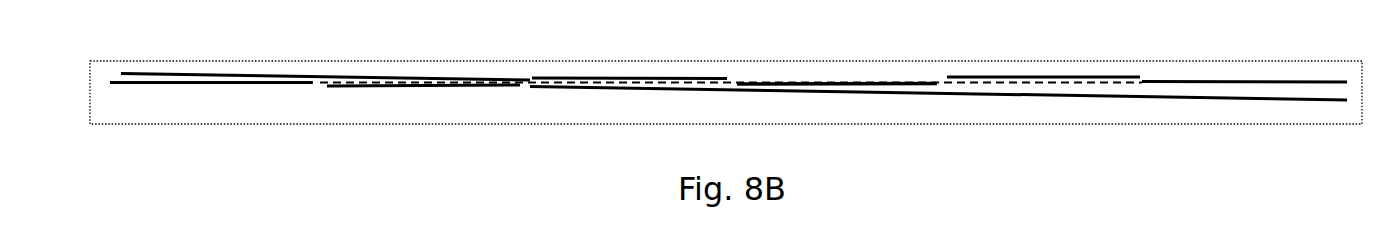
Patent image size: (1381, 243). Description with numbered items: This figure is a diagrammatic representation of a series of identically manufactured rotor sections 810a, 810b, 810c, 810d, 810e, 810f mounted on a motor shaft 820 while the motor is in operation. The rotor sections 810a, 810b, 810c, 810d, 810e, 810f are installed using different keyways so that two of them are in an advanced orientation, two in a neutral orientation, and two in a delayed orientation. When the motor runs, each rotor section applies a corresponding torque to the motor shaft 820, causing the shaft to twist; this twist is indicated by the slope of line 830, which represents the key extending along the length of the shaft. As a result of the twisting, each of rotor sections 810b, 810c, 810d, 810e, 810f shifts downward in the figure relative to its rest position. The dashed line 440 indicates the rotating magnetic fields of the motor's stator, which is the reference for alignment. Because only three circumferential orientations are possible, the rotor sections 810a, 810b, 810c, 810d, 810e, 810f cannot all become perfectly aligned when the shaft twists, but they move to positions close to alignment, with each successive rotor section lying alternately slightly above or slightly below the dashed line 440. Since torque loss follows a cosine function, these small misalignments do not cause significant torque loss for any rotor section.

The motor shaft 820 is at (242, 124).
The dashed line 440 is at (200, 84).
The rotor section 810a is at (219, 82).
The rotor section 810b is at (405, 88).
The rotor section 810c is at (615, 78).
The rotor section 810d is at (843, 83).
The rotor section 810e is at (1035, 77).
The rotor section 810f is at (1197, 81).
The line 830 is at (308, 76).